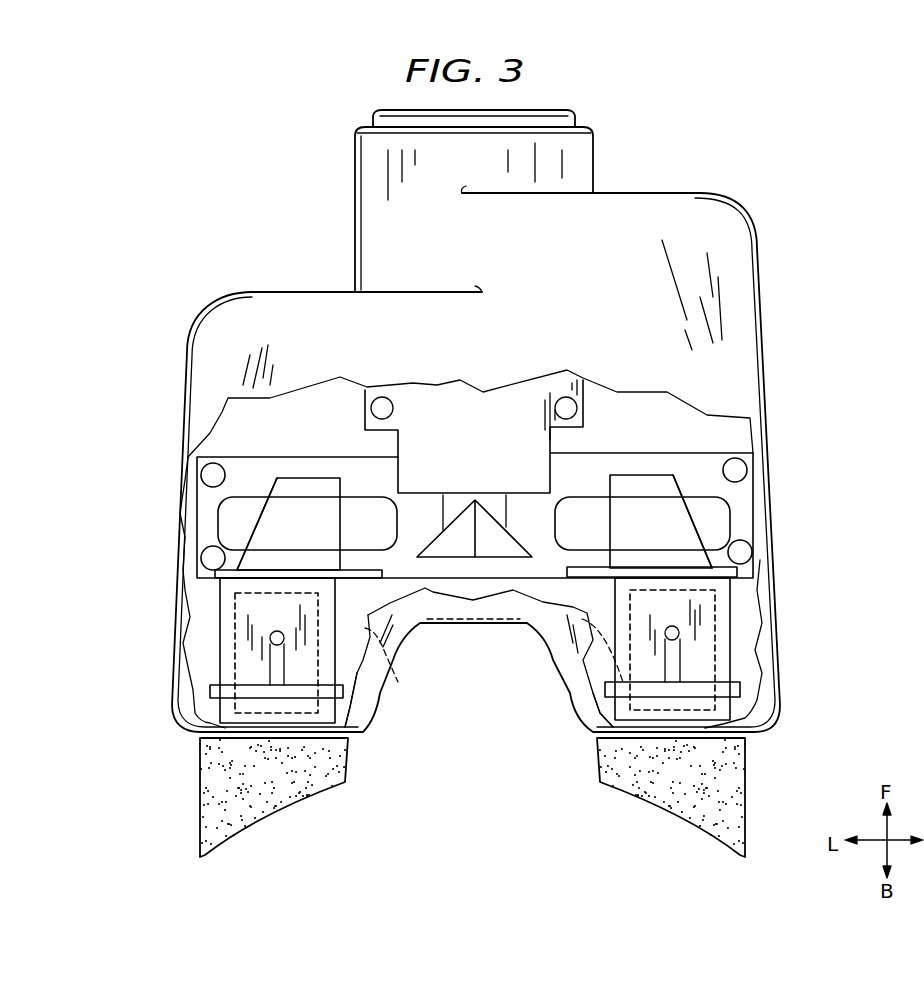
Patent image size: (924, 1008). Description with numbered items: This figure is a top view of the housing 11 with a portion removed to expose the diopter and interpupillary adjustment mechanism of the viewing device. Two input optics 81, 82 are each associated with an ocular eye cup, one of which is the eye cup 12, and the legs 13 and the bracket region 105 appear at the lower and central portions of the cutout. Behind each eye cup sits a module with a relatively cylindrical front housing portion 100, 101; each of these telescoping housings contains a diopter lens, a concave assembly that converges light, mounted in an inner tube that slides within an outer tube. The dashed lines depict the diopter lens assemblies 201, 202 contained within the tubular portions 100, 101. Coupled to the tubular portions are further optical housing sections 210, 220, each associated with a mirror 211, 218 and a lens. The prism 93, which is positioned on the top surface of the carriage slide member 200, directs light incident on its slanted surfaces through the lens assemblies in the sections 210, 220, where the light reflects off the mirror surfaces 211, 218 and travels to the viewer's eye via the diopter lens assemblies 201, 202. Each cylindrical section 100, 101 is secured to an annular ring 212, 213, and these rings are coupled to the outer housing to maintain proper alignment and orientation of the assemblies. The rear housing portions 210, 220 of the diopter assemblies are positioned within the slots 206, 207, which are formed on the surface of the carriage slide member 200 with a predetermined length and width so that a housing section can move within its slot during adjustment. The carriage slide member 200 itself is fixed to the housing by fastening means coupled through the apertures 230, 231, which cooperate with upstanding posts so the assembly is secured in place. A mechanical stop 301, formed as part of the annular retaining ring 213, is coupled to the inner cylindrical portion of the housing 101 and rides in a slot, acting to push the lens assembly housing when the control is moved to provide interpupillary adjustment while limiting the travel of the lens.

The housing 11 is at (747, 356).
The eye cup 12 is at (737, 797).
The left leg 13 is at (198, 798).
The input optic 81 is at (356, 722).
The input optic 82 is at (607, 717).
The prism 93 is at (490, 527).
The cylindrical front housing portion 100 is at (227, 615).
The cylindrical front housing portion 101 is at (723, 603).
The central bracket 105 is at (505, 413).
The carriage slide member 200 is at (764, 527).
The diopter lens assembly 201 is at (233, 650).
The diopter lens assembly 202 is at (723, 647).
The slot 206 is at (727, 507).
The slot 207 is at (372, 507).
The optical housing section 210 is at (310, 560).
The mirror 211 is at (280, 485).
The annular ring 212 is at (213, 690).
The annular ring 213 is at (735, 688).
The mirror 218 is at (672, 486).
The optical housing section 220 is at (672, 560).
The aperture 230 is at (222, 470).
The aperture 231 is at (207, 558).
The mechanical stop 301 is at (687, 632).